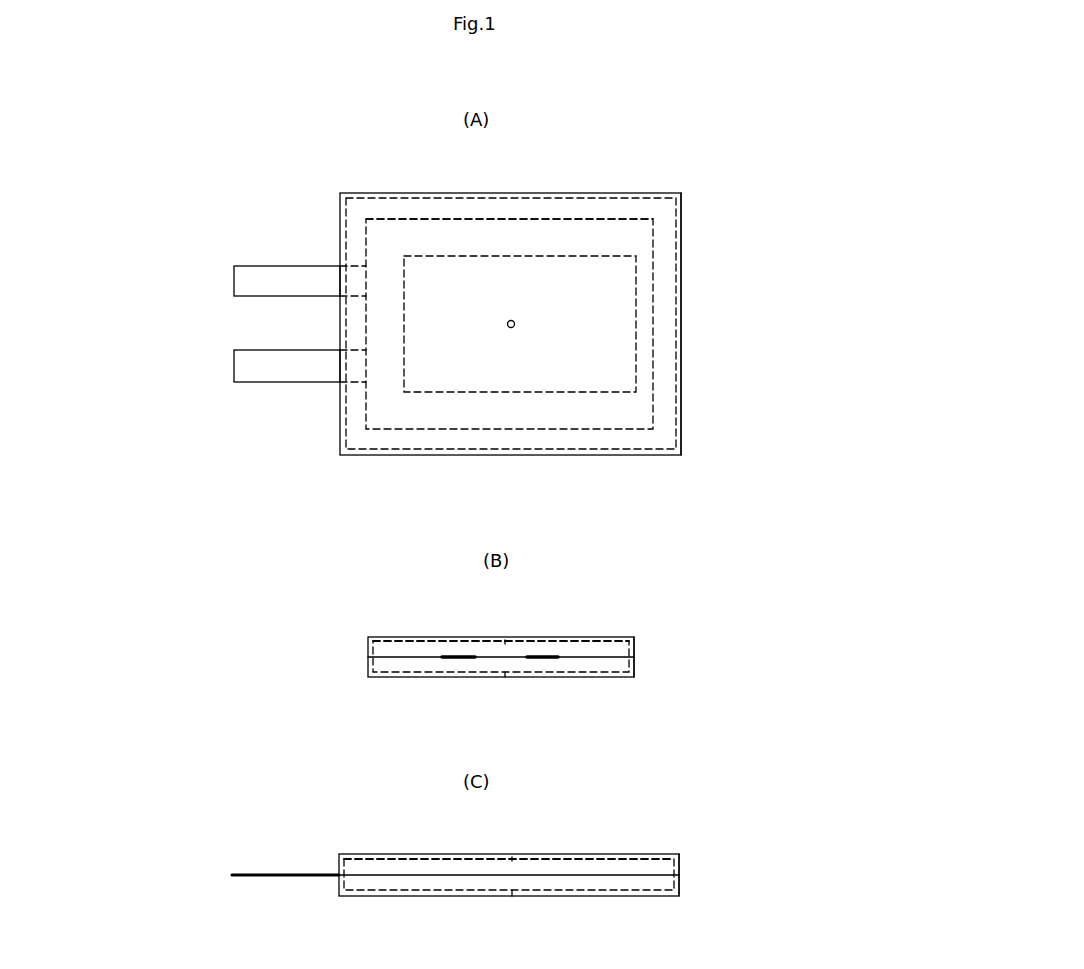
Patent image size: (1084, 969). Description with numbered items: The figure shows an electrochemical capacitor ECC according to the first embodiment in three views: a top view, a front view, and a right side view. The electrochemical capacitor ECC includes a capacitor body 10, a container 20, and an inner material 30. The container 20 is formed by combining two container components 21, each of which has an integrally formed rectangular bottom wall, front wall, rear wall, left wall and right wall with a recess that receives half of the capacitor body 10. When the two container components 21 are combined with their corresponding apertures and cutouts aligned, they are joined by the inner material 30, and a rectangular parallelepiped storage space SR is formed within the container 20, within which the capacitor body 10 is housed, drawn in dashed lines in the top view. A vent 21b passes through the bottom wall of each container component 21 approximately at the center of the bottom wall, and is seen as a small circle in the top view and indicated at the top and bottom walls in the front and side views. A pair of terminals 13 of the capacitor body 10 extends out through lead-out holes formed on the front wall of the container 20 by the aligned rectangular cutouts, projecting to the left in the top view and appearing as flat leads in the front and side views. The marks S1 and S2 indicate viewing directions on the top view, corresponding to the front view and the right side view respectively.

The capacitor body 10 is at (440, 283).
The terminals 13 is at (280, 280).
The container 20 is at (559, 193).
The container component 21 is at (681, 236).
The vent 21b is at (511, 328).
The inner material 30 is at (602, 207).
The electrochemical capacitor ECC is at (356, 190).
The storage space SR is at (641, 201).
The first direction S1 is at (340, 323).
The second direction S2 is at (526, 177).